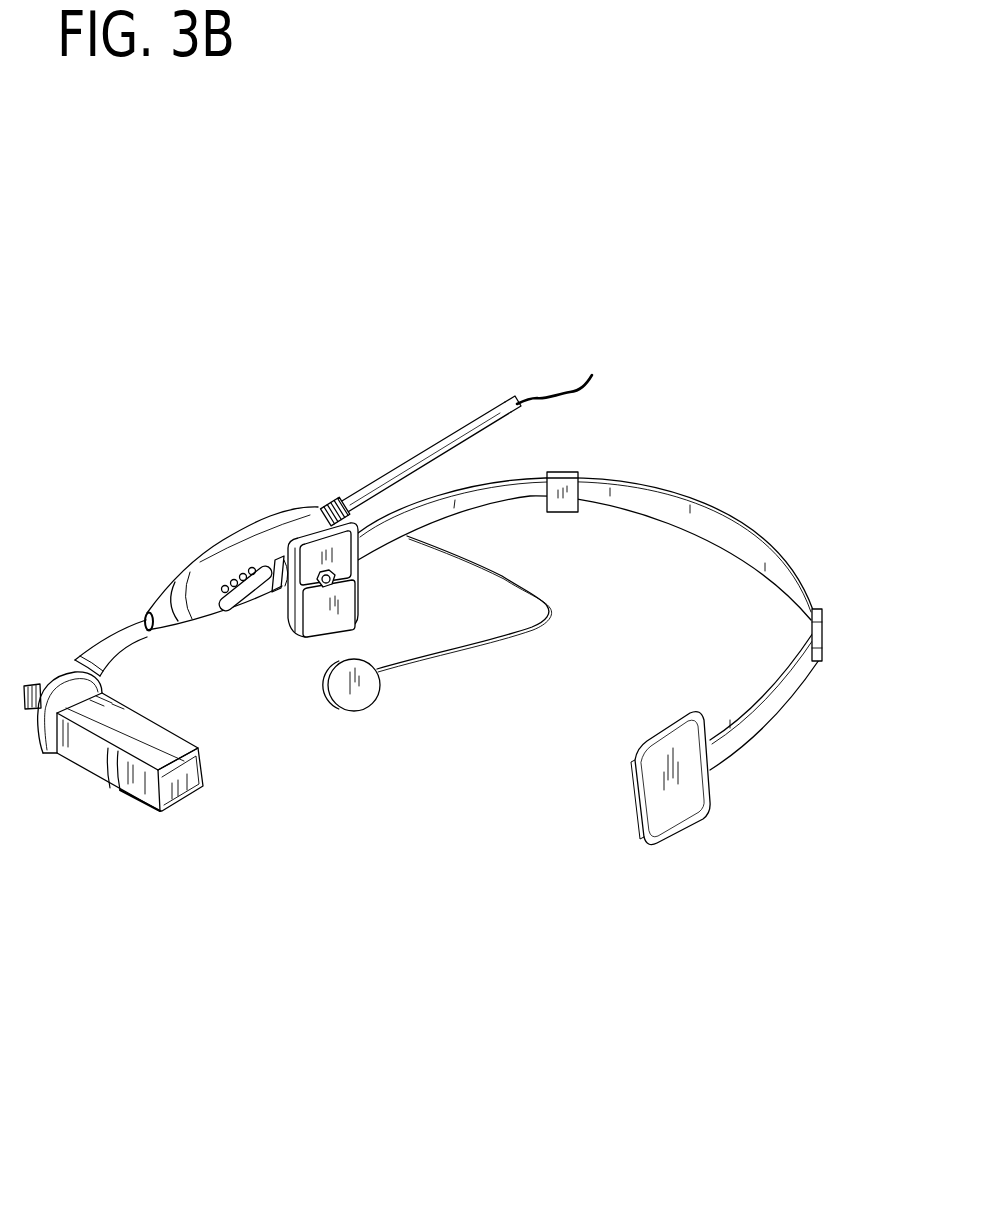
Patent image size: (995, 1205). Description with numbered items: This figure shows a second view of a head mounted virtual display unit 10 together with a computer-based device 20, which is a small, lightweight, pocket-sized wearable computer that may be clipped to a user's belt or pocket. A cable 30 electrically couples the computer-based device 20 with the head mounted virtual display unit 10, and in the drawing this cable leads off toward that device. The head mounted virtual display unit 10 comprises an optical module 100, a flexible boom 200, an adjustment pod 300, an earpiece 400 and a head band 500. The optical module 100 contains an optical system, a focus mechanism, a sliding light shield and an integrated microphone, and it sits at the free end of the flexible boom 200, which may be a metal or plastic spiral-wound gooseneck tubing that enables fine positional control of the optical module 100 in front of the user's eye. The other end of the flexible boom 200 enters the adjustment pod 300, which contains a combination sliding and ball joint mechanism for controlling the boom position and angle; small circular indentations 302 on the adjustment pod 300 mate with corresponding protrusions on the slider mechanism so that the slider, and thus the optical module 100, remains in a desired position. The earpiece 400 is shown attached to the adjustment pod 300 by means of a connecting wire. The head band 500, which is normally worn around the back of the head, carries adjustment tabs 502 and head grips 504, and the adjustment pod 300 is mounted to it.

The head mounted virtual display unit 10 is at (290, 973).
The computer-based device 20 is at (597, 337).
The cable 30 is at (370, 481).
The optical module 100 is at (168, 745).
The flexible boom 200 is at (98, 650).
The adjustment pod 300 is at (223, 541).
The circular indentations 302 is at (237, 585).
The earpiece 400 is at (381, 690).
The head band 500 is at (480, 503).
The adjustment tabs 502 is at (574, 474).
The head grips 504 is at (709, 792).